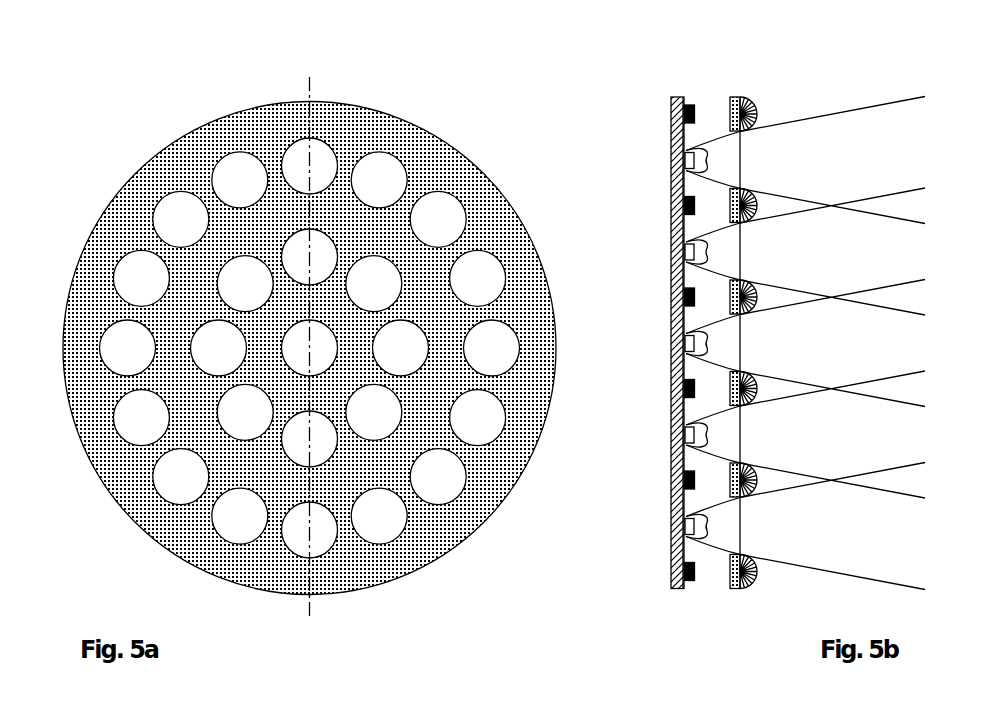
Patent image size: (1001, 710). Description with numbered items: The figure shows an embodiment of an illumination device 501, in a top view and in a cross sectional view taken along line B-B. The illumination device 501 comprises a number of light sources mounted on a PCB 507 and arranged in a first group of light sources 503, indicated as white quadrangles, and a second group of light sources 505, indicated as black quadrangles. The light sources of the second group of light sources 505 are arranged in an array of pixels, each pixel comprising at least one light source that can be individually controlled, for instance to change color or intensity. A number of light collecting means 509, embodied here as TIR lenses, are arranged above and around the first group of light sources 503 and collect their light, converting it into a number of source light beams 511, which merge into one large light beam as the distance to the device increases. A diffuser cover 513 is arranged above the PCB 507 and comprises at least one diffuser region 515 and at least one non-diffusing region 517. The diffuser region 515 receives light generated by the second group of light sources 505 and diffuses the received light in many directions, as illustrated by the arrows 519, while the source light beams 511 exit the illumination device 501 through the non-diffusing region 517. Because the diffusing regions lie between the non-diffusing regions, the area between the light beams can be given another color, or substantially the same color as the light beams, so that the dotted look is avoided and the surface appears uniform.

In FIG. 5A, the illumination device 501 is at (214, 46).
In FIG. 5B, the illumination device 501 is at (748, 55).
In FIG. 5B, the first group of light sources 503 is at (675, 525).
In FIG. 5B, the second group of light sources 505 is at (685, 213).
In FIG. 5B, the PCB 507 is at (672, 589).
In FIG. 5A, the light collecting means 509 is at (310, 262).
In FIG. 5B, the light collecting means 509 is at (688, 262).
In FIG. 5B, the source light beams 511 is at (833, 343).
In FIG. 5A, the diffuser cover 513 is at (410, 573).
In FIG. 5B, the diffuser cover 513 is at (740, 590).
In FIG. 5A, the diffuser region 515 is at (232, 472).
In FIG. 5B, the diffuser region 515 is at (687, 173).
In FIG. 5A, the non-diffusing region 517 is at (282, 222).
In FIG. 5B, the arrows 519 is at (755, 107).